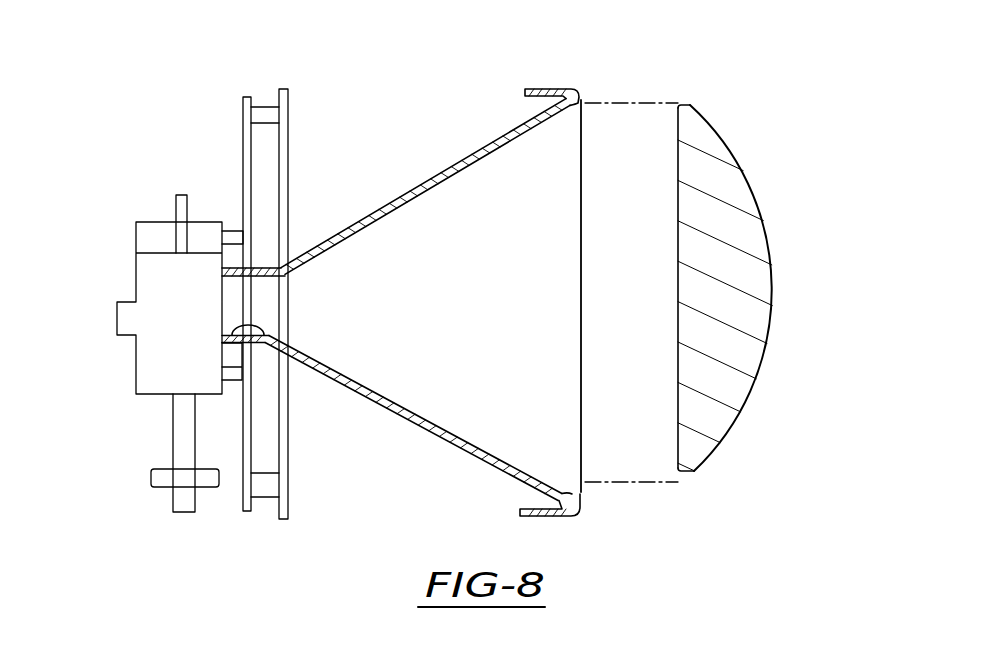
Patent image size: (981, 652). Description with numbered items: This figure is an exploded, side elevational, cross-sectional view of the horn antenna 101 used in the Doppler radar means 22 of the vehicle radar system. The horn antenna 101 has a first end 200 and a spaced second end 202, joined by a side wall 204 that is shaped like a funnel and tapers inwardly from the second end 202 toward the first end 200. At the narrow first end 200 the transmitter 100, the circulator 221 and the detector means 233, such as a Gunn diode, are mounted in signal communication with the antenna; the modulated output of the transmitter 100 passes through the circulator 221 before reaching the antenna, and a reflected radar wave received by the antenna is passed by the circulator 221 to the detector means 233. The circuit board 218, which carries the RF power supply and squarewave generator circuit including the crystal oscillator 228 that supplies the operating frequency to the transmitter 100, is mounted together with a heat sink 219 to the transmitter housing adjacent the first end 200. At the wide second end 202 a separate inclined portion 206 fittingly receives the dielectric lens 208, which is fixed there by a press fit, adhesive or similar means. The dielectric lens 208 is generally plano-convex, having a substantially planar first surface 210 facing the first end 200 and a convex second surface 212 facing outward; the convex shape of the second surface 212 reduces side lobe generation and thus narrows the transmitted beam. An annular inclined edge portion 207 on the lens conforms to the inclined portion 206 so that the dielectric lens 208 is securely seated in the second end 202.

The Doppler radar means 22 is at (413, 118).
The transmitter 100 is at (178, 424).
The horn antenna 101 is at (386, 190).
The first end 200 is at (261, 337).
The second end 202 is at (583, 97).
The side wall 204 is at (401, 413).
The inclined portion 206 is at (582, 492).
The annular inclined edge portion 207 is at (690, 475).
The dielectric lens 208 is at (787, 228).
The first surface 210 is at (678, 167).
The second surface 212 is at (772, 322).
The circuit board 218 is at (290, 100).
The heat sink 219 is at (242, 128).
The circulator 221 is at (146, 278).
The crystal oscillator 228 is at (210, 484).
The detector means 233 is at (146, 228).